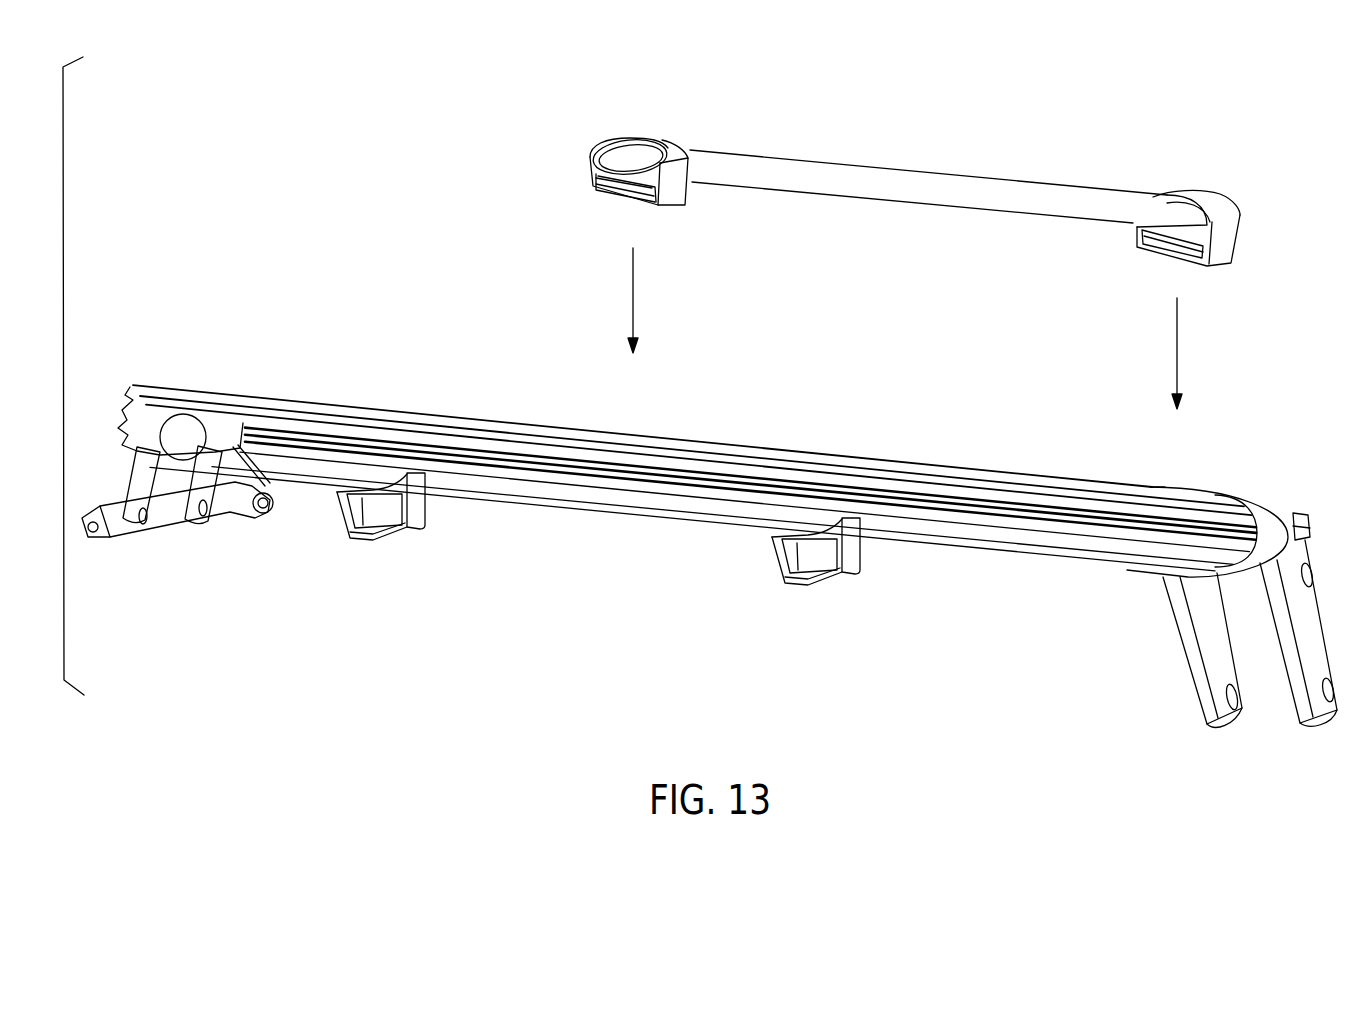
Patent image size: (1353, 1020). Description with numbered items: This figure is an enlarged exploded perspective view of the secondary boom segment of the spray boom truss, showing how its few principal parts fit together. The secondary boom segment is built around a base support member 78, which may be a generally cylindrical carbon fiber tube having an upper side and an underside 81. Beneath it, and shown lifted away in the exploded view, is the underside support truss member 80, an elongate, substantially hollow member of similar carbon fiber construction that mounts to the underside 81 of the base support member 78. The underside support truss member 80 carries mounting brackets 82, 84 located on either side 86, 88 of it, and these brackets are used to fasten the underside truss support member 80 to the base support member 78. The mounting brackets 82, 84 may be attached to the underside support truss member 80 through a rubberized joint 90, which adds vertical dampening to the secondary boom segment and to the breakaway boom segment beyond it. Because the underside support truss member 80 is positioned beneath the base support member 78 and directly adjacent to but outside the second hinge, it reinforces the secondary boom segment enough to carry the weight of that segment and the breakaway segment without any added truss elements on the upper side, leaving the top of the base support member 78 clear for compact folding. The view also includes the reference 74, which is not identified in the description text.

The motor bracket 74 is at (313, 483).
The base support member 78 is at (578, 545).
The underside support truss member 80 is at (984, 162).
The underside 81 is at (347, 412).
The mounting bracket 82 is at (593, 170).
The mounting bracket 84 is at (1227, 240).
The side 86 is at (615, 157).
The side 88 is at (1194, 210).
The rubberized joint 90 is at (612, 157).